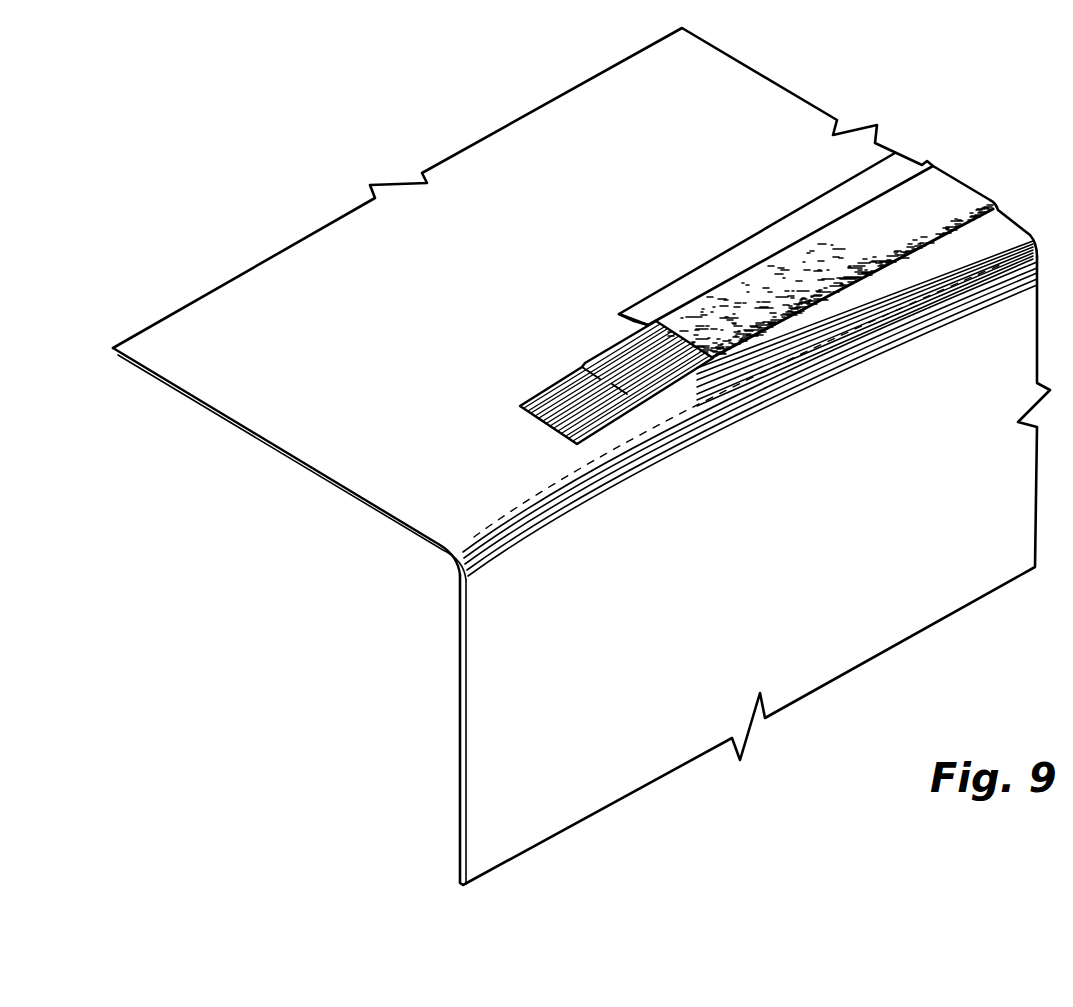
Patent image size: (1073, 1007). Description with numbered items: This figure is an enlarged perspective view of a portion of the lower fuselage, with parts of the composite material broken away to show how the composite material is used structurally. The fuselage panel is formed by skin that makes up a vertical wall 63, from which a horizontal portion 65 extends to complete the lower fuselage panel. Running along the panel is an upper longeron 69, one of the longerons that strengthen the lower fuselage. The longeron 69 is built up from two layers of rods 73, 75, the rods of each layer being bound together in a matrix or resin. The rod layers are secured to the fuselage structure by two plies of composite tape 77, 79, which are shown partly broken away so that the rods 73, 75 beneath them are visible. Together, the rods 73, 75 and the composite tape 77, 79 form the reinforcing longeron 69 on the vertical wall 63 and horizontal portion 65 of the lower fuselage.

The vertical wall 63 is at (500, 637).
The horizontal portion 65 is at (330, 438).
The upper longeron 69 is at (698, 247).
The rods 73 is at (540, 421).
The rods 75 is at (580, 384).
The ply of composite tape 77 is at (742, 385).
The ply of composite tape 79 is at (633, 333).